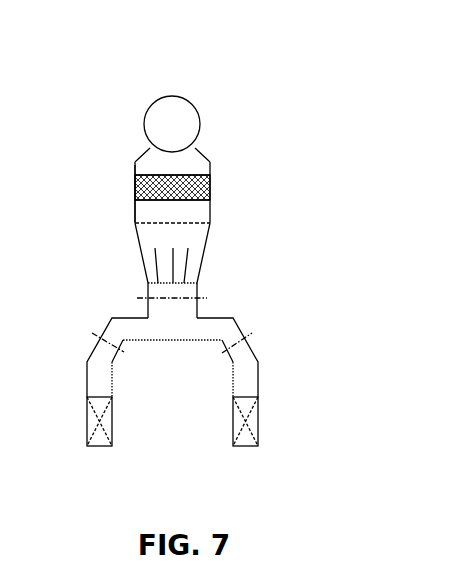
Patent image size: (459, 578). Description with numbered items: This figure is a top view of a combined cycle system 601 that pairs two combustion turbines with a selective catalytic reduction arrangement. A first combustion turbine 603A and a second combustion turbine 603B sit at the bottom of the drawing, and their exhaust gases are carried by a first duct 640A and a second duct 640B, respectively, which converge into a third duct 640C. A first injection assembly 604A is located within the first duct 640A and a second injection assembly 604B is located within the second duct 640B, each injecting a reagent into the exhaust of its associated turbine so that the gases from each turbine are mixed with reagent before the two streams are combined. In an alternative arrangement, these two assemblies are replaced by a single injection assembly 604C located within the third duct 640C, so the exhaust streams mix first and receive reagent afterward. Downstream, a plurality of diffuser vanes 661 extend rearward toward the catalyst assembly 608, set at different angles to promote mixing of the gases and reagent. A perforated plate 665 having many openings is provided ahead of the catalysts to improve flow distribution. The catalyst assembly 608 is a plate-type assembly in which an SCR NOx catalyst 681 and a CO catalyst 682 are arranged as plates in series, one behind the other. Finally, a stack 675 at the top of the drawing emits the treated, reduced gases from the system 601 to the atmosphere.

The combined cycle system 601 is at (234, 70).
The stack 675 is at (203, 125).
The NOx catalyst 681 is at (212, 193).
The CO catalyst 682 is at (133, 180).
The catalyst assembly 608 is at (128, 194).
The perforated plate 665 is at (212, 223).
The diffuser vanes 661 is at (193, 245).
The third duct 640C is at (146, 285).
The single injection assembly 604C is at (210, 297).
The first duct 640A is at (85, 383).
The second duct 640B is at (260, 382).
The first injection assembly 604A is at (127, 357).
The second injection assembly 604B is at (218, 359).
The first combustion turbine 603A is at (87, 419).
The second combustion turbine 603B is at (257, 420).